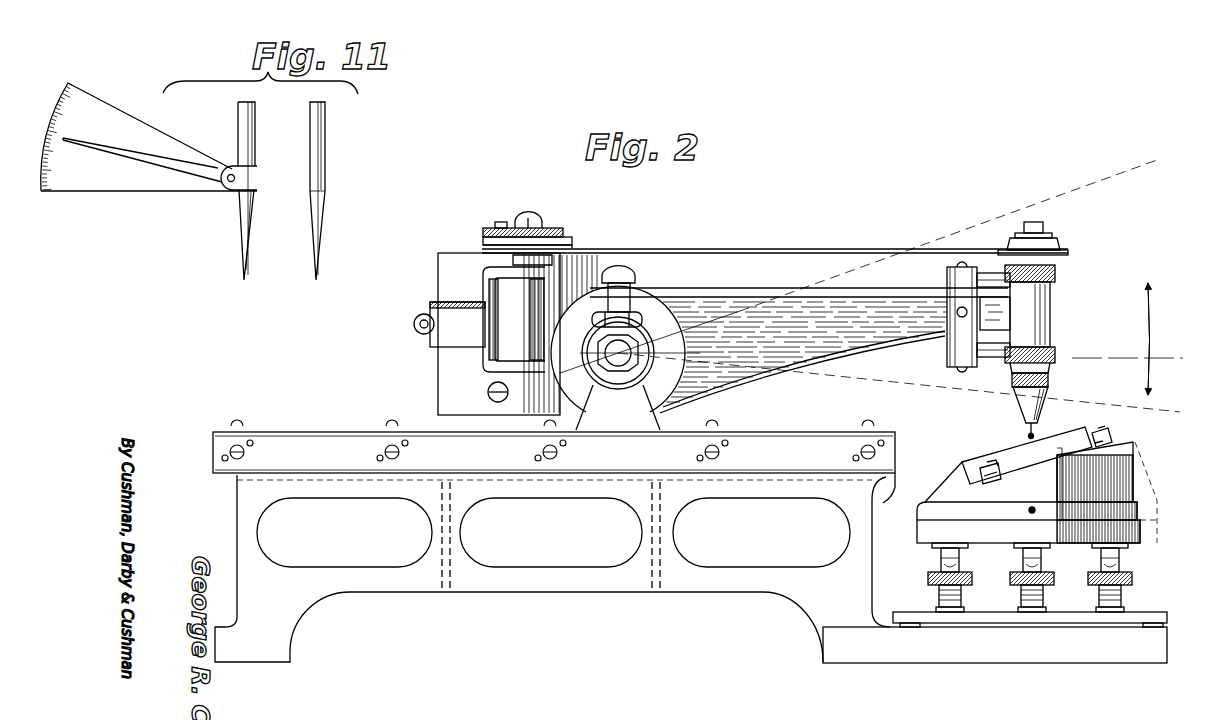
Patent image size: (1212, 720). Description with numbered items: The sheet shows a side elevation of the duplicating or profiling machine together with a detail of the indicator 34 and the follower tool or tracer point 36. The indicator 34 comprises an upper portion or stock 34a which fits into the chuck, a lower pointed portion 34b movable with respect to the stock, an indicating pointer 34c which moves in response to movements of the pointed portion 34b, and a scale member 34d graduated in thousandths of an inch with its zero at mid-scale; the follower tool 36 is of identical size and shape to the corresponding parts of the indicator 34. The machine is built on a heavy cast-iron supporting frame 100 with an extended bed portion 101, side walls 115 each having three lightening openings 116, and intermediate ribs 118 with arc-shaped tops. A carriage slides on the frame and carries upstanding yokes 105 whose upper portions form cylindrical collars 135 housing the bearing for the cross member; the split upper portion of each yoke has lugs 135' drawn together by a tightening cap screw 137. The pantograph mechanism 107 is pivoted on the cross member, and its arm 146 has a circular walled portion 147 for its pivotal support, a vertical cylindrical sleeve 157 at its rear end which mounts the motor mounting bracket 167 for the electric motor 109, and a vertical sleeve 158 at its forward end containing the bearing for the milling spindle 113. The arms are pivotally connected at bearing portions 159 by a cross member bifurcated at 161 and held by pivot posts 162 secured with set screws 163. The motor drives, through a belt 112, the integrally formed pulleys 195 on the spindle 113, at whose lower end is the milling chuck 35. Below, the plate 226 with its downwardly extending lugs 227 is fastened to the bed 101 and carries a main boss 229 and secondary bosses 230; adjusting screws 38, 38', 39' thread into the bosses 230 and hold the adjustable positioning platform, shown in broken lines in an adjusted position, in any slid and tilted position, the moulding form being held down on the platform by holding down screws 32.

In FIG. 11, the scale member 34d is at (77, 107).
In FIG. 11, the indicating pointer 34c is at (127, 148).
In FIG. 11, the indicator 34 is at (210, 193).
In FIG. 2, the indicator 34 is at (1028, 431).
In FIG. 11, the upper portion or stock 34a is at (237, 127).
In FIG. 11, the lower pointed portion 34b is at (238, 227).
In FIG. 11, the follower tool or tracer point 36 is at (370, 198).
In FIG. 2, the supporting frame 100 is at (563, 596).
In FIG. 2, the extended bed portion 101 is at (1040, 664).
In FIG. 2, the upstanding yokes 105 is at (802, 375).
In FIG. 2, the pantograph mechanism 107 is at (754, 382).
In FIG. 2, the electric motor 109 is at (438, 377).
In FIG. 2, the belt 112 is at (808, 232).
In FIG. 2, the milling spindle 113 is at (1043, 224).
In FIG. 2, the side walls 115 is at (398, 592).
In FIG. 2, the lightening openings 116 is at (350, 548).
In FIG. 2, the intermediate ribs 118 is at (445, 595).
In FIG. 2, the cylindrical collars 135 is at (618, 358).
In FIG. 2, the lugs 135' is at (636, 294).
In FIG. 2, the tightening cap screw 137 is at (583, 310).
In FIG. 2, the arm 146 is at (872, 295).
In FIG. 2, the circular walled portion 147 is at (685, 292).
In FIG. 2, the vertical cylindrical sleeve 157 is at (510, 300).
In FIG. 2, the vertical sleeve 158 is at (1055, 302).
In FIG. 2, the bearing portions 159 is at (955, 280).
In FIG. 2, the bifurcated ends 161 is at (958, 266).
In FIG. 2, the pivot posts 162 is at (962, 262).
In FIG. 2, the set screws 163 is at (956, 313).
In FIG. 2, the motor mounting bracket 167 is at (428, 345).
In FIG. 2, the pulleys 195 is at (1070, 246).
In FIG. 2, the holding down screws 32 is at (1105, 432).
In FIG. 2, the milling chuck 35 is at (1022, 405).
In FIG. 2, the adjusting screw 38 is at (1148, 570).
In FIG. 2, the adjusting screw 38' is at (982, 568).
In FIG. 2, the adjusting screw 39' is at (1067, 568).
In FIG. 2, the plate 226 is at (1192, 582).
In FIG. 2, the downwardly extending lugs 227 is at (912, 628).
In FIG. 2, the main boss 229 is at (1052, 606).
In FIG. 2, the secondary bosses 230 is at (937, 605).